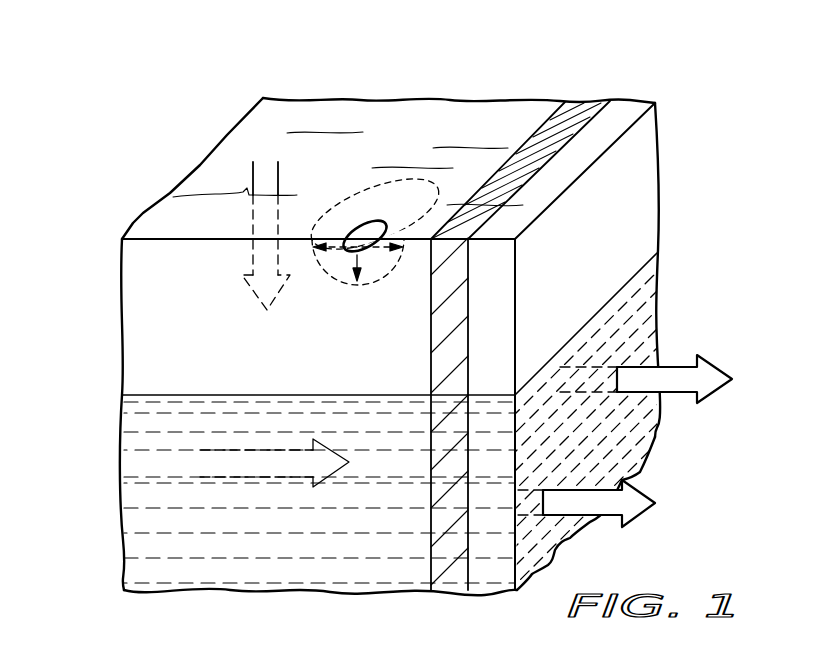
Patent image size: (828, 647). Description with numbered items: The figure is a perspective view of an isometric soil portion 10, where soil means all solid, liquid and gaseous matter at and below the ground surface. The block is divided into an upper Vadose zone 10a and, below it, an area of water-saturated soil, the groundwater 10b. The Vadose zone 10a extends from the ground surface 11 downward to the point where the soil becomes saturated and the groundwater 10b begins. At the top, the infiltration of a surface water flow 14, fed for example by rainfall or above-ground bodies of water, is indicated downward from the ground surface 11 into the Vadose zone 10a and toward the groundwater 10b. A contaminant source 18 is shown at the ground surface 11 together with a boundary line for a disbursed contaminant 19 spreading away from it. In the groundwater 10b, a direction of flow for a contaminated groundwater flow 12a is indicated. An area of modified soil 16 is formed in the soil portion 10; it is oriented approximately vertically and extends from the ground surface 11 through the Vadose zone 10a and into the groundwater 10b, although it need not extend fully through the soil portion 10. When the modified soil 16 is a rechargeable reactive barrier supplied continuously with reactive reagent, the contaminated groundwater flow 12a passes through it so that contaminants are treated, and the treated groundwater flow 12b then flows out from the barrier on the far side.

The soil portion 10 is at (235, 48).
The Vadose zone 10a is at (108, 245).
The groundwater 10b is at (108, 397).
The ground surface 11 is at (308, 115).
The contaminated groundwater flow 12a is at (401, 483).
The treated groundwater flow 12b is at (777, 375).
The surface water flow 14 is at (248, 256).
The modified soil 16 is at (450, 362).
The contaminant source 18 is at (372, 228).
The disbursed contaminant 19 is at (371, 284).